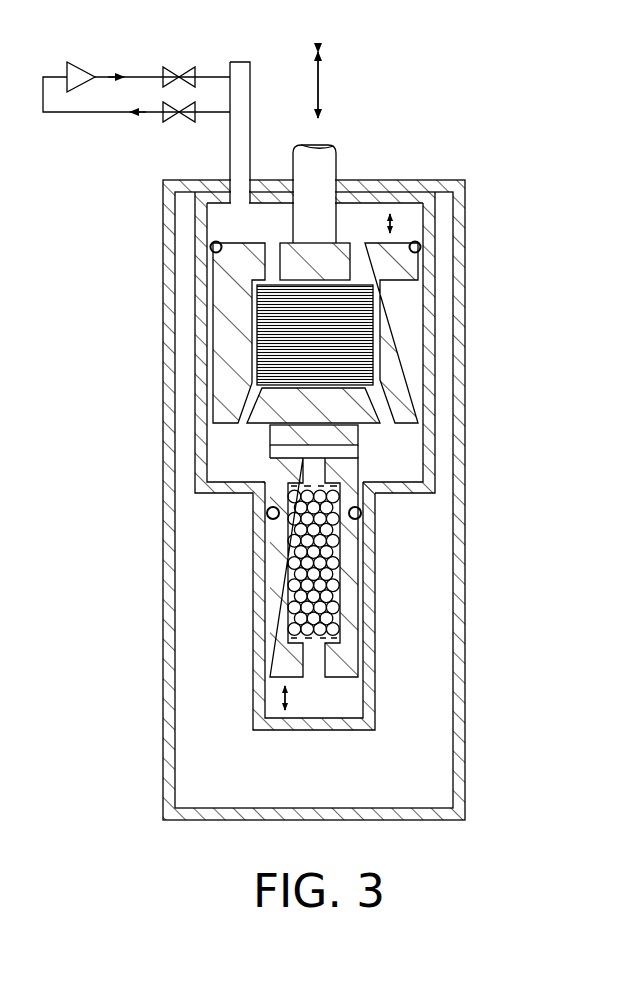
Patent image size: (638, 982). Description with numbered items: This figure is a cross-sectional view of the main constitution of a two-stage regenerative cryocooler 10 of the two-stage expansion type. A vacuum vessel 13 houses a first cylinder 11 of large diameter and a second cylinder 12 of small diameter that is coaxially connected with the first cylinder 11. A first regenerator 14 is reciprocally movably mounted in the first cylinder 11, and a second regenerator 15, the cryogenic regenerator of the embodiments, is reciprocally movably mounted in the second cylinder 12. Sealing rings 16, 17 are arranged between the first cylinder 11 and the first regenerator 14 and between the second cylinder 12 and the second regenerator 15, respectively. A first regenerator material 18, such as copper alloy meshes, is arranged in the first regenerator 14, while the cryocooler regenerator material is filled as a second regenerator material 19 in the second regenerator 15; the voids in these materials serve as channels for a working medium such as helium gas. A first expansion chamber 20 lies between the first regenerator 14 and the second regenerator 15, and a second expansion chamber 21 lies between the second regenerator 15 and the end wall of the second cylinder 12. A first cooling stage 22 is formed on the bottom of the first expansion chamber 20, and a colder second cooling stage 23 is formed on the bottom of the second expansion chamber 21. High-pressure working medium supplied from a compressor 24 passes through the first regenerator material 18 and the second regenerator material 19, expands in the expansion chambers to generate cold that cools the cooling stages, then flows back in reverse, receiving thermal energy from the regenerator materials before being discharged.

The two-stage regenerative cryocooler 10 is at (485, 149).
The first cylinder 11 is at (207, 331).
The second cylinder 12 is at (253, 594).
The vacuum vessel 13 is at (163, 678).
The first regenerator 14 is at (405, 363).
The second regenerator 15 is at (343, 658).
The sealing ring 16 is at (421, 247).
The sealing ring 17 is at (362, 515).
The first regenerator material 18 is at (373, 315).
The second regenerator material 19 is at (342, 583).
The first expansion chamber 20 is at (405, 456).
The second expansion chamber 21 is at (343, 700).
The first cooling stage 22 is at (405, 493).
The second cooling stage 23 is at (360, 730).
The compressor 24 is at (82, 62).